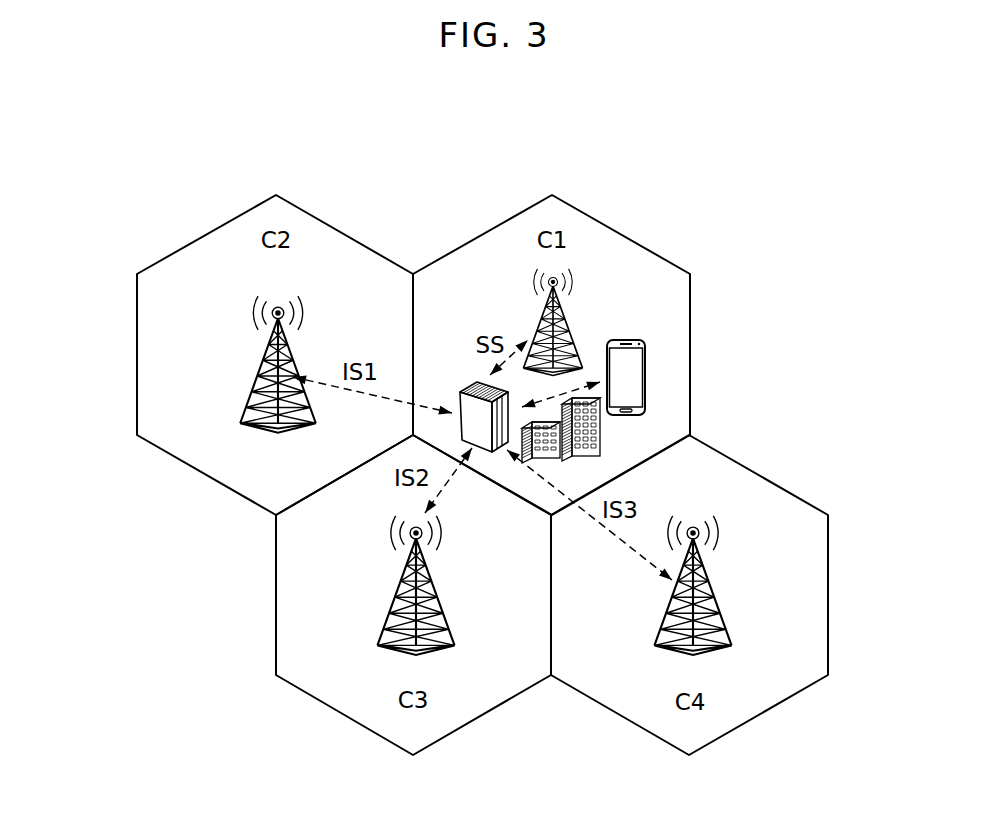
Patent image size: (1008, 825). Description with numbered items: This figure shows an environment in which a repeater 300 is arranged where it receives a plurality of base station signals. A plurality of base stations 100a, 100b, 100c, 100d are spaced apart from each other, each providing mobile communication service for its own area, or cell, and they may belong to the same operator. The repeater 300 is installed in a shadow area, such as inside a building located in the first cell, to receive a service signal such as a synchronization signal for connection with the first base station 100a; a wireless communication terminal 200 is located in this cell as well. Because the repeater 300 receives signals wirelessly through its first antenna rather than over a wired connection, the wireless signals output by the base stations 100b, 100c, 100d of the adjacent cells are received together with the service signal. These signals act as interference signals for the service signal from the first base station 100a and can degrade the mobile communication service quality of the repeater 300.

The first base station 100a is at (554, 278).
The base station 100b is at (253, 393).
The base station 100c is at (402, 587).
The base station 100d is at (707, 587).
The wireless communication terminal 200 is at (645, 362).
The repeater 300 is at (472, 388).